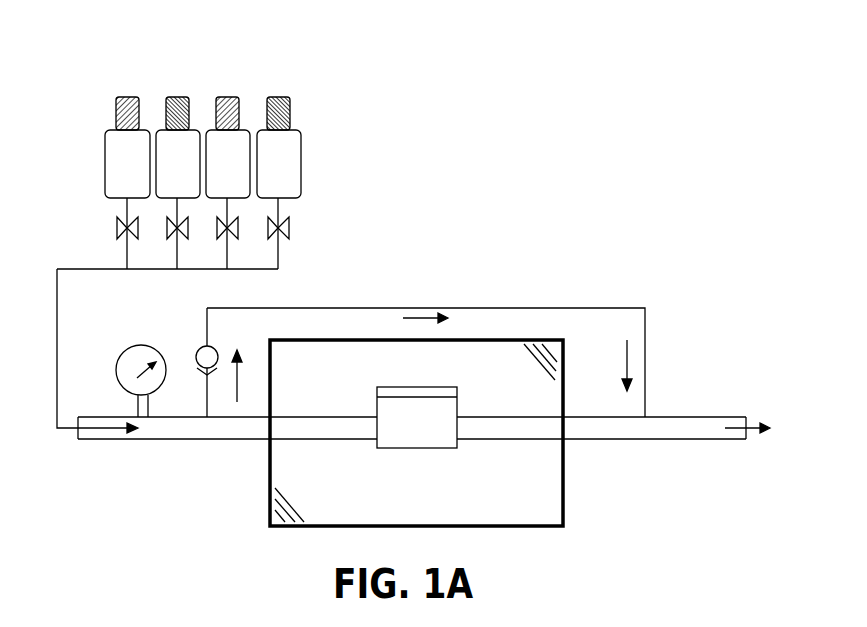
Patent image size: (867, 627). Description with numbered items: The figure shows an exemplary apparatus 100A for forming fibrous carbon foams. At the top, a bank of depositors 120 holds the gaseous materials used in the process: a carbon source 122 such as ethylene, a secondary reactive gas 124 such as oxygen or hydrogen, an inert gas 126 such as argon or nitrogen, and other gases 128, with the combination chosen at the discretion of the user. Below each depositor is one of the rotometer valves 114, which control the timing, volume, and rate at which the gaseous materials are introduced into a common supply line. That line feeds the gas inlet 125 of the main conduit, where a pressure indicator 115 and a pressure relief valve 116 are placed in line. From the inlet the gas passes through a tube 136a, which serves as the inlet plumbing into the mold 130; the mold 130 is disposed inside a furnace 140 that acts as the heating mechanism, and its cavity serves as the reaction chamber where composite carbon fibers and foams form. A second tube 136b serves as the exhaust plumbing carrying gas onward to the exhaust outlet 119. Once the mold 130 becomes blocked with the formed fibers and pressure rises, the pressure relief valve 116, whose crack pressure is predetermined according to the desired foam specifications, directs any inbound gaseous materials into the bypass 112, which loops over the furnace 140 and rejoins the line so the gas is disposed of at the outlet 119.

The apparatus 100A is at (433, 23).
The depositors 120 is at (203, 119).
The carbon source 122 is at (146, 172).
The secondary reactive gas 124 is at (196, 172).
The inert gas 126 is at (246, 172).
The other gases 128 is at (297, 172).
The valves 114 is at (113, 225).
The pressure gauge 115 is at (125, 352).
The pressure relief valve 116 is at (197, 348).
The bypass 112 is at (426, 347).
The gas inlet 125 is at (174, 443).
The exhaust outlet 119 is at (666, 444).
The mold 130 is at (435, 430).
The tube 136a is at (323, 427).
The tube 136b is at (510, 427).
The furnace 140 is at (360, 504).